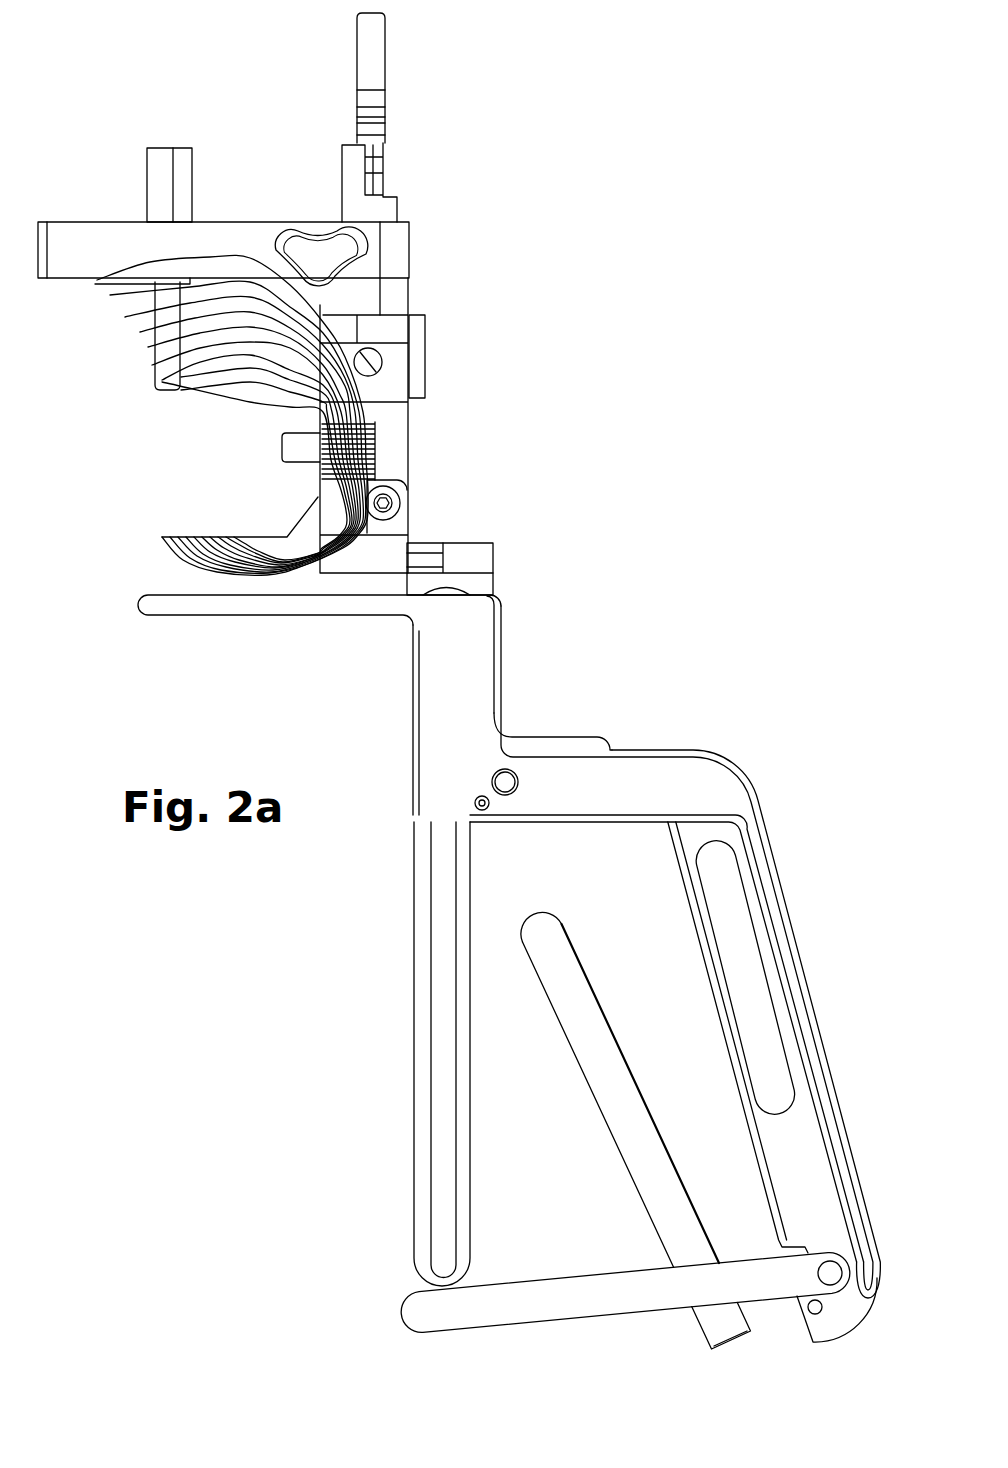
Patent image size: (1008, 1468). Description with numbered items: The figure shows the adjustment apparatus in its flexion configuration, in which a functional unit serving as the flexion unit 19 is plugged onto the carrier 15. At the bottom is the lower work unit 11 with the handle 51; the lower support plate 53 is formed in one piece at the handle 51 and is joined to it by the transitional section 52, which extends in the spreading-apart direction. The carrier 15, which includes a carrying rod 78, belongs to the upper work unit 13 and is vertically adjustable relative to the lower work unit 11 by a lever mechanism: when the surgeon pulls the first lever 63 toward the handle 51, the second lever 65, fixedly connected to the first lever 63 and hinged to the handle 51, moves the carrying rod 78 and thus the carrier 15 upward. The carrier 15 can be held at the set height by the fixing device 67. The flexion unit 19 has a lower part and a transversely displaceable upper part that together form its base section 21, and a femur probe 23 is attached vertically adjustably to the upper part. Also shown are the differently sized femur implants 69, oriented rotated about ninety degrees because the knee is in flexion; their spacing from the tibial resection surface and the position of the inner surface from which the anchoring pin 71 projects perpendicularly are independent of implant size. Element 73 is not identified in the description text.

The lower work unit 11 is at (740, 700).
The upper work unit 13 is at (540, 430).
The carrier 15 is at (512, 560).
The flexion unit 19 is at (436, 322).
The base section 21 is at (393, 442).
The femur probe 23 is at (273, 200).
The handle 51 is at (822, 962).
The transitional section 52 is at (435, 708).
The lower support plate 53 is at (240, 605).
The first lever 63 is at (593, 1060).
The second lever 65 is at (583, 1303).
The fixing device 67 is at (568, 746).
The femur implants 69 is at (142, 331).
The anchoring pin 71 is at (317, 498).
The clamping plate 73 is at (283, 445).
The carrying rod 78 is at (428, 1060).